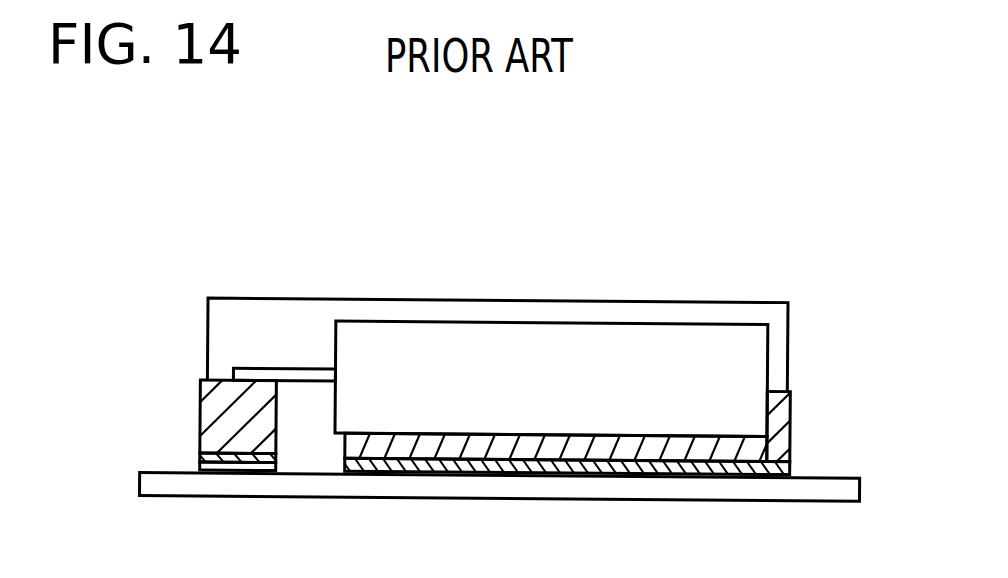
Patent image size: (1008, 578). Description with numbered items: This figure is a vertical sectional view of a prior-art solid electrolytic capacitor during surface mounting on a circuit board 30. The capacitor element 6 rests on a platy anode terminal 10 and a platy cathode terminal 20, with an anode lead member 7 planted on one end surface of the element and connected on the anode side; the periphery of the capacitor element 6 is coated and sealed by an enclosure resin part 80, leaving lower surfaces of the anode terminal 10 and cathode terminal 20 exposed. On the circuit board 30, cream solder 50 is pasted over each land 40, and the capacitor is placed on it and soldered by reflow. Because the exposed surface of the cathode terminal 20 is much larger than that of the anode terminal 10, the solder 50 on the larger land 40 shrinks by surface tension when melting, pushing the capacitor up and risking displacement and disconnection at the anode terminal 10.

The capacitor element 6 is at (743, 344).
The anode lead member 7 is at (262, 379).
The anode terminal 10 is at (228, 420).
The cathode terminal 20 is at (777, 432).
The circuit board 30 is at (575, 482).
The land 40 is at (262, 470).
The solder 50 is at (220, 470).
The enclosure resin part 80 is at (272, 327).